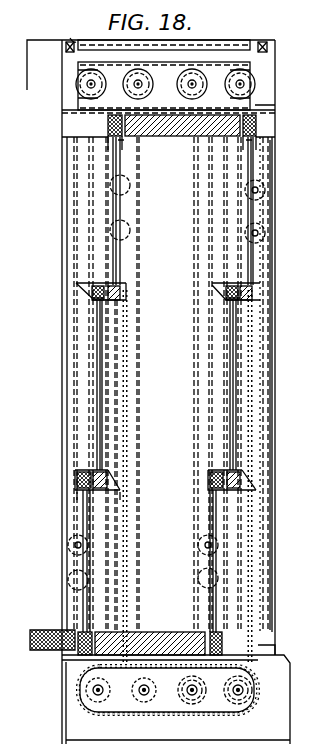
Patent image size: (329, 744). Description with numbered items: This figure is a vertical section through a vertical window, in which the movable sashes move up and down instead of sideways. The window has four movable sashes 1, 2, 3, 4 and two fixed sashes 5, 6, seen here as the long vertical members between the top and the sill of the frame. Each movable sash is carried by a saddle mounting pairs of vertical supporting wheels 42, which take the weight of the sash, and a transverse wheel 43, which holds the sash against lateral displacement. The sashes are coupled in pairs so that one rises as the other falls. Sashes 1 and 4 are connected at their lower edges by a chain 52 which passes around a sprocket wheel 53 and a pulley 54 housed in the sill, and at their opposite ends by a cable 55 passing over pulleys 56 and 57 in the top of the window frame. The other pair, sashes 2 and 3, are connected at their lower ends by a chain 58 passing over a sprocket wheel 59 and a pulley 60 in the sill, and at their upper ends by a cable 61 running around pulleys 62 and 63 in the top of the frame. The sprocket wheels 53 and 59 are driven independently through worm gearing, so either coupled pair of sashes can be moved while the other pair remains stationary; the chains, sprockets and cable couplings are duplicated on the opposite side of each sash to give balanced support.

The movable sash 1 is at (240, 572).
The movable sash 2 is at (249, 259).
The movable sash 3 is at (88, 512).
The movable sash 4 is at (16, 157).
The fixed sash 5 is at (235, 412).
The fixed sash 6 is at (100, 382).
The vertical supporting wheels 42 is at (204, 574).
The transverse wheel 43 is at (133, 222).
The chain 52 is at (128, 399).
The sprocket wheel 53 is at (159, 632).
The pulley 54 is at (186, 688).
The cable 55 is at (154, 141).
The pulley 56 is at (186, 66).
The pulley 57 is at (147, 65).
The chain 58 is at (262, 448).
The sprocket wheel 59 is at (110, 706).
The pulley 60 is at (242, 685).
The cable 61 is at (256, 106).
The pulley 62 is at (256, 79).
The pulley 63 is at (78, 74).